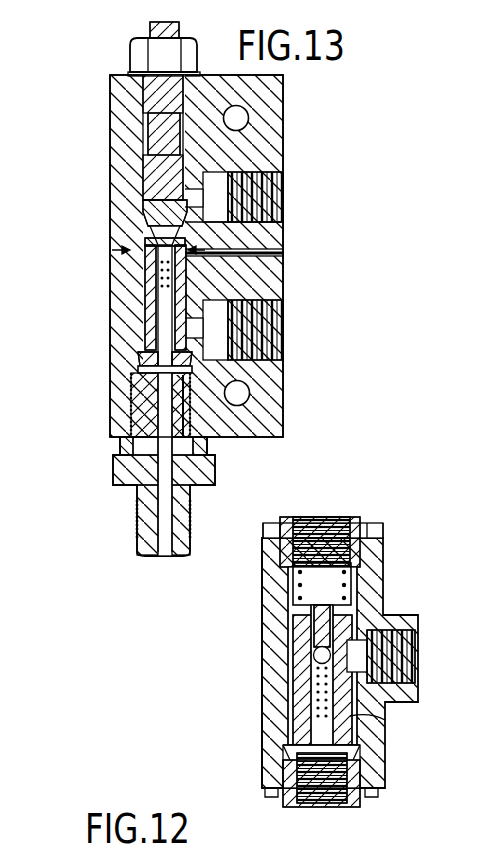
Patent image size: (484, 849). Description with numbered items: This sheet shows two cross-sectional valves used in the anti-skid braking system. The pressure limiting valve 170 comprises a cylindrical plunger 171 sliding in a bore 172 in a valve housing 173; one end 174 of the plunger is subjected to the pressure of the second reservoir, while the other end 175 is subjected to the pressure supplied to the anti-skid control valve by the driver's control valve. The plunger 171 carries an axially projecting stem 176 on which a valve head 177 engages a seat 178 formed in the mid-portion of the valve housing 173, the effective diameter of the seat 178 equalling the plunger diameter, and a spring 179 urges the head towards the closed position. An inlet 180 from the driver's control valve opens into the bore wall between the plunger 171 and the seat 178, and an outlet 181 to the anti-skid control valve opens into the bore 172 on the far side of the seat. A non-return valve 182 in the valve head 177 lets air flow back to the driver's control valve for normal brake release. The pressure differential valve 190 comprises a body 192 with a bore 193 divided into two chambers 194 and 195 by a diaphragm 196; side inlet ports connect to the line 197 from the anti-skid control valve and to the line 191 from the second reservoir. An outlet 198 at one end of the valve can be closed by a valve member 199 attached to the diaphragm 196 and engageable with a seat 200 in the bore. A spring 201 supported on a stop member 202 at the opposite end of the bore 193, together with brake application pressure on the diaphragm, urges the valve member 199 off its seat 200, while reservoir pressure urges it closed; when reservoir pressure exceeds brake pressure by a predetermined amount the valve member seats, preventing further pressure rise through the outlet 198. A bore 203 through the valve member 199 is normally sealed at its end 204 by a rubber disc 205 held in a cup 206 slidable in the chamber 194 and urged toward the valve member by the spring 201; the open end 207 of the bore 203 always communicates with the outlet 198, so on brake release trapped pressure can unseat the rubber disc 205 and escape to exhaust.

In FIG. 12, the valve 170 is at (385, 572).
In FIG. 12, the cylindrical plunger 171 is at (303, 724).
In FIG. 12, the bore 172 is at (362, 718).
In FIG. 12, the valve housing 173 is at (278, 762).
In FIG. 12, the one end 174 is at (345, 755).
In FIG. 12, the other end 175 is at (292, 600).
In FIG. 12, the stem 176 is at (306, 632).
In FIG. 12, the valve head 177 is at (306, 588).
In FIG. 12, the seat 178 is at (350, 638).
In FIG. 12, the spring 179 is at (362, 530).
In FIG. 12, the inlet 180 is at (398, 672).
In FIG. 12, the outlet 181 is at (343, 530).
In FIG. 12, the non-return valve 182 is at (314, 655).
In FIG. 13, the pressure differential valve 190 is at (285, 127).
In FIG. 13, the line 191 is at (284, 342).
In FIG. 13, the body 192 is at (284, 410).
In FIG. 13, the bore 193 is at (284, 288).
In FIG. 13, the chamber 194 is at (284, 213).
In FIG. 13, the chamber 195 is at (284, 257).
In FIG. 13, the diaphragm 196 is at (124, 251).
In FIG. 13, the line 197 is at (284, 186).
In FIG. 13, the outlet 198 is at (160, 518).
In FIG. 13, the valve member 199 is at (145, 362).
In FIG. 13, the seat 200 is at (148, 345).
In FIG. 13, the spring 201 is at (140, 147).
In FIG. 13, the stop member 202 is at (145, 118).
In FIG. 13, the bore 203 is at (158, 298).
In FIG. 13, the end 204 is at (150, 226).
In FIG. 13, the rubber disc 205 is at (150, 204).
In FIG. 13, the cup 206 is at (285, 206).
In FIG. 13, the open end 207 is at (152, 383).